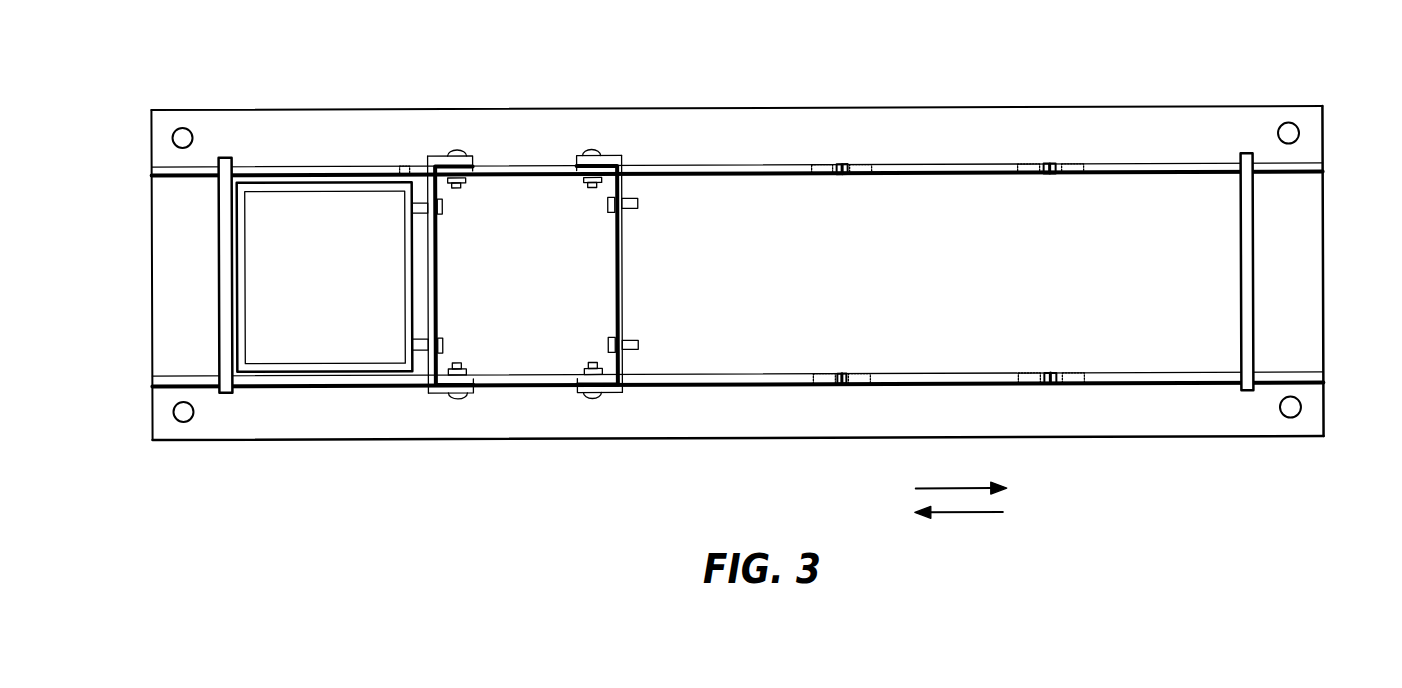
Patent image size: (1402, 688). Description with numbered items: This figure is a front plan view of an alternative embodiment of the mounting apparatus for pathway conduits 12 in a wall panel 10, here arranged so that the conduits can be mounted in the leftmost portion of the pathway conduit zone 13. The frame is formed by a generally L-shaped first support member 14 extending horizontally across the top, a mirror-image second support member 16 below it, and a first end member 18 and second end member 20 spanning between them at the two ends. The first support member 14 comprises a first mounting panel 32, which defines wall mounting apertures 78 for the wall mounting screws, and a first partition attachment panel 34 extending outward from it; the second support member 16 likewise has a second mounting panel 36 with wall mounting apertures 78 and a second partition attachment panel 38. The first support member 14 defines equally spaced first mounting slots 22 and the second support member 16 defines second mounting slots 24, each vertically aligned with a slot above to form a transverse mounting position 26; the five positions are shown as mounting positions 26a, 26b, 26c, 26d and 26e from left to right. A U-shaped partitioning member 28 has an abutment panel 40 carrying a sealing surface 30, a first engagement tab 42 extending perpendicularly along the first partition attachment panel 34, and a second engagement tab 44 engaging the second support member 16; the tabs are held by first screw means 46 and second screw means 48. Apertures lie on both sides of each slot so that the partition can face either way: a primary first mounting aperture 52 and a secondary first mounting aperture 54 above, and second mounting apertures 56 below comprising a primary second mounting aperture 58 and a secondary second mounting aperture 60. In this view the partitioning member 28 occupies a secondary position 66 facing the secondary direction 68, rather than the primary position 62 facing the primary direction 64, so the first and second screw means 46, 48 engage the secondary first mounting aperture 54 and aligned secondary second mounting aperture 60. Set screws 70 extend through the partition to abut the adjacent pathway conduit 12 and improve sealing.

The wall panel 10 is at (523, 517).
The pathway conduit 12 is at (328, 366).
The pathway conduit zone 13 is at (262, 337).
The first support member 14 is at (152, 166).
The second support member 16 is at (152, 410).
The first end member 18 is at (222, 281).
The second end member 20 is at (1253, 276).
The first mounting slot 22 is at (843, 165).
The second mounting slot 24 is at (843, 390).
The transverse mounting position 26 is at (302, 202).
The transverse mounting position 26a is at (318, 280).
The transverse mounting position 26b is at (530, 278).
The transverse mounting position 26c is at (780, 277).
The transverse mounting position 26d is at (970, 278).
The transverse mounting position 26e is at (1173, 278).
The partitioning member 28 is at (434, 396).
The sealing surface 30 is at (430, 288).
The first mounting panel 32 is at (1238, 145).
The first partition attachment panel 34 is at (1190, 165).
The second mounting panel 36 is at (751, 420).
The second partition attachment panel 38 is at (1113, 386).
The abutment panel 40 is at (616, 270).
The first engagement tab 42 is at (468, 156).
The second engagement tab 44 is at (470, 396).
The first screw means 46 is at (458, 186).
The second screw means 48 is at (460, 364).
The primary first mounting aperture 52 is at (405, 165).
The secondary first mounting aperture 54 is at (1076, 166).
The second mounting aperture 56 is at (813, 373).
The primary second mounting aperture 58 is at (1035, 373).
The secondary second mounting aperture 60 is at (866, 373).
The primary position 62 is at (616, 233).
The primary direction 64 is at (958, 489).
The secondary position 66 is at (436, 156).
The secondary direction 68 is at (952, 515).
The set screw 70 is at (418, 206).
The wall mounting aperture 78 is at (173, 134).